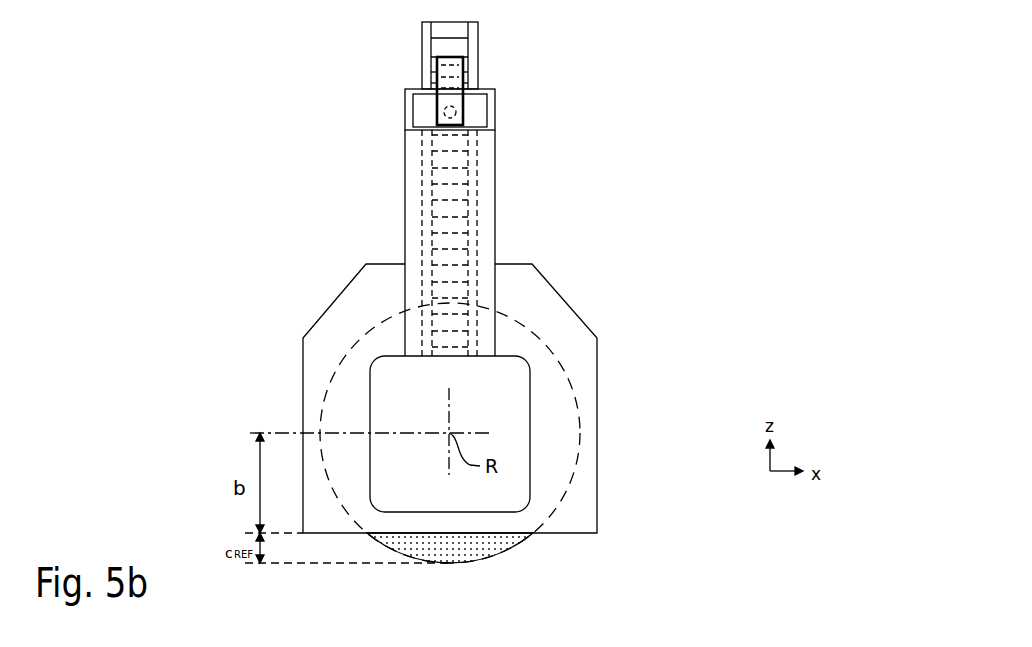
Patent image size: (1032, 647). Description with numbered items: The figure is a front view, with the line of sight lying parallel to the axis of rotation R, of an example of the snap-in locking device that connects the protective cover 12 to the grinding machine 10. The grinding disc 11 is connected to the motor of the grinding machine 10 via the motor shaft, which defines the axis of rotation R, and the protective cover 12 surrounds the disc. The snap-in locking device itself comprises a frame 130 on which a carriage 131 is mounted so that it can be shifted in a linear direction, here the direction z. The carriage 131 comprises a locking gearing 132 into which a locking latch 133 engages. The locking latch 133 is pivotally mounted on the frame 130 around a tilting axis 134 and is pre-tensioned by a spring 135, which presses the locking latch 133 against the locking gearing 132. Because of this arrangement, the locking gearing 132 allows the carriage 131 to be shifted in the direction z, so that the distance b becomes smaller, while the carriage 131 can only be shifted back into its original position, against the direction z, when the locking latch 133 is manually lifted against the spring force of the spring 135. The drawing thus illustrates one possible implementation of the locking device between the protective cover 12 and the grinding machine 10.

The frame 130 is at (405, 223).
The carriage 131 is at (473, 35).
The locking gearing 132 is at (447, 28).
The locking latch 133 is at (435, 115).
The tilting axis 134 is at (433, 100).
The spring 135 is at (455, 114).
The protective cover 12 is at (540, 305).
The grinding machine 10 is at (513, 423).
The grinding disc 11 is at (472, 543).